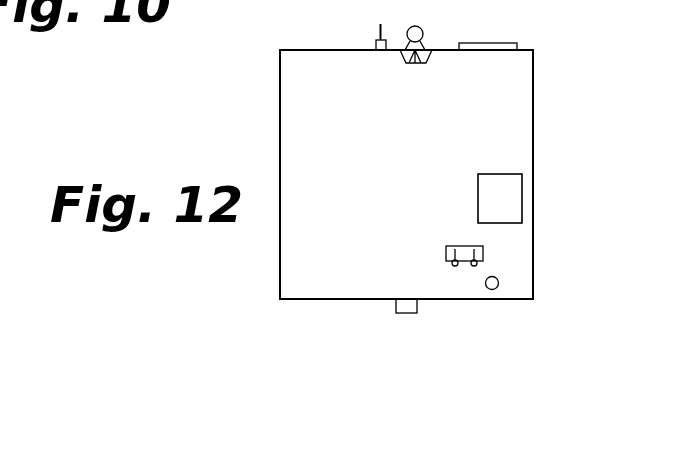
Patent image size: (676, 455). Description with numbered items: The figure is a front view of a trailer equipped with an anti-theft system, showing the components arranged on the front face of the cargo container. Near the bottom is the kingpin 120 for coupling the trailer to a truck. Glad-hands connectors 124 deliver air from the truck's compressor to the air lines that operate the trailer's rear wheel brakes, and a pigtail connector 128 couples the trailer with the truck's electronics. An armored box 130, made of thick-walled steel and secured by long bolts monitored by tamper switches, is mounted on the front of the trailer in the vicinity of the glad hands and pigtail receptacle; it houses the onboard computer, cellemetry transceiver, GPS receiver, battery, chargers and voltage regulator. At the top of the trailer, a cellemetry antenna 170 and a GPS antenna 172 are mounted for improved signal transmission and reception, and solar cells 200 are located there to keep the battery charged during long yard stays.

The kingpin 120 is at (403, 306).
The glad-hands connectors 124 is at (443, 252).
The pigtail connector 128 is at (497, 288).
The armored box 130 is at (512, 192).
The cellemetry antenna 170 is at (378, 32).
The GPS antenna 172 is at (422, 36).
The solar cells 200 is at (504, 43).